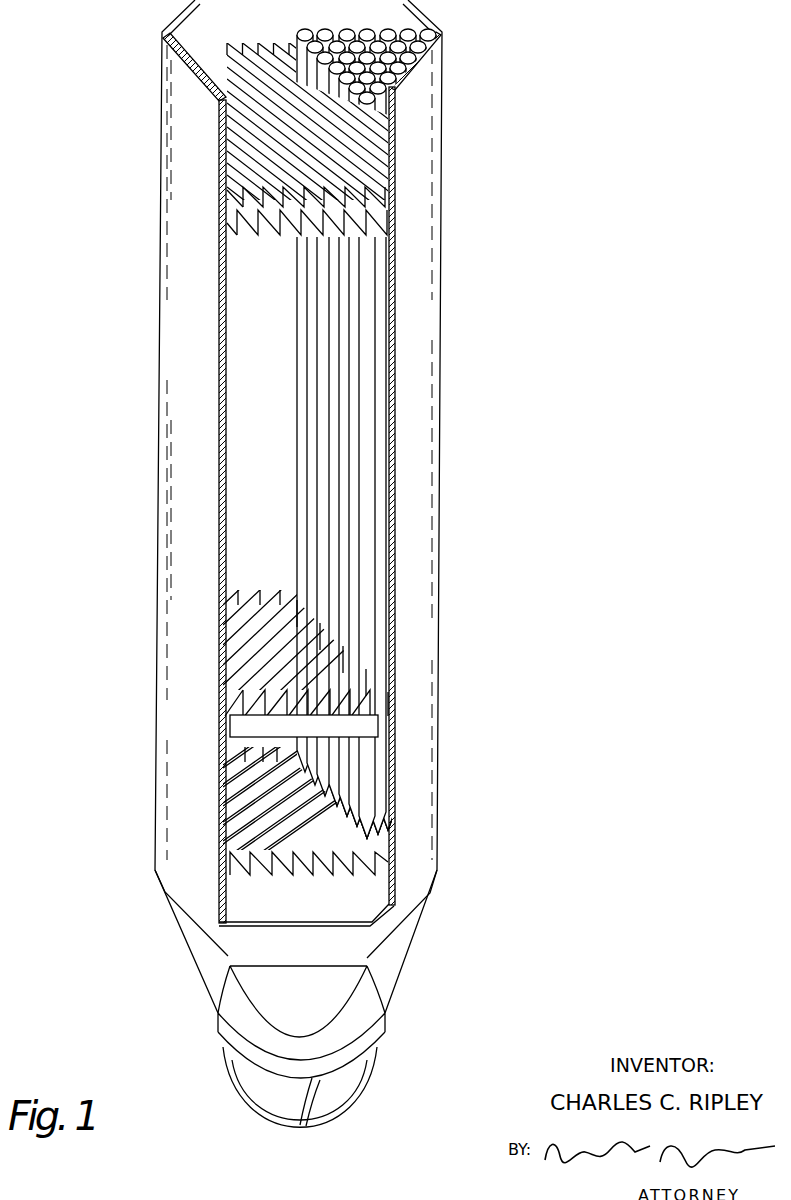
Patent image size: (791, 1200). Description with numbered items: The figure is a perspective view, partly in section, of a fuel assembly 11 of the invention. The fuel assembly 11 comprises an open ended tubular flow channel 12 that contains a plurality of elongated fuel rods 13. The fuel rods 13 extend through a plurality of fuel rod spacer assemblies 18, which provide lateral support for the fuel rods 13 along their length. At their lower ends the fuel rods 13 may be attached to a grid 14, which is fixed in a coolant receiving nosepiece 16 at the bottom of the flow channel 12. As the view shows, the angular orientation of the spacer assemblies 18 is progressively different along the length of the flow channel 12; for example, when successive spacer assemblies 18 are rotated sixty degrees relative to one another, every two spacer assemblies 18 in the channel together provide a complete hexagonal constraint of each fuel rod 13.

The fuel assembly 11 is at (379, 563).
The tubular flow channel 12 is at (440, 543).
The fuel rods 13 is at (388, 369).
The grid 14 is at (382, 853).
The coolant receiving nosepiece 16 is at (180, 938).
The fuel rod spacer assemblies 18 is at (380, 227).